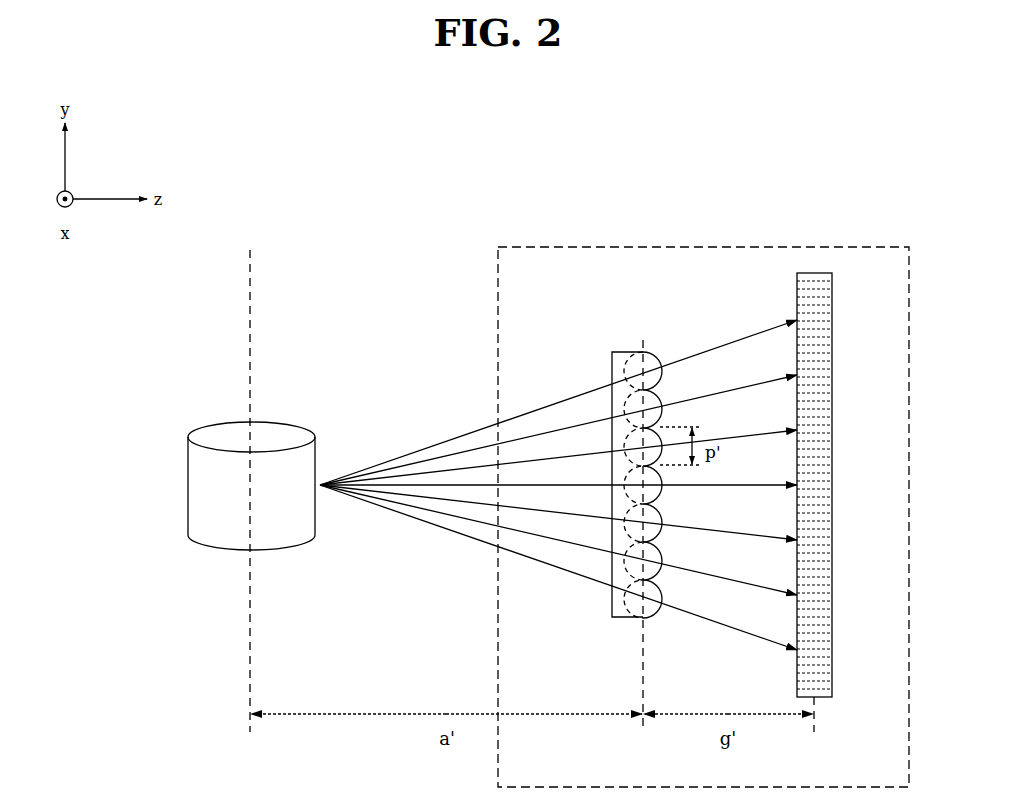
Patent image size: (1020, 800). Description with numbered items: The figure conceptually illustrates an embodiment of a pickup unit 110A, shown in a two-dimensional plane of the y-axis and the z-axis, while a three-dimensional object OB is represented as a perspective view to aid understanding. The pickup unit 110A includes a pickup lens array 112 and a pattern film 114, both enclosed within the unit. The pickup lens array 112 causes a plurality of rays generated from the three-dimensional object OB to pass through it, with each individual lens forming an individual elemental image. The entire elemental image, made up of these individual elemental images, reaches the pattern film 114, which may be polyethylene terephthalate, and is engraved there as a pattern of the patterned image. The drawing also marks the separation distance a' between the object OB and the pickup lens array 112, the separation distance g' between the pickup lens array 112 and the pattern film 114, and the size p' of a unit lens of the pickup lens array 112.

The 3D object OB is at (216, 530).
The pickup unit 110A is at (883, 247).
The pickup lens array 112 is at (625, 352).
The pattern film 114 is at (812, 273).